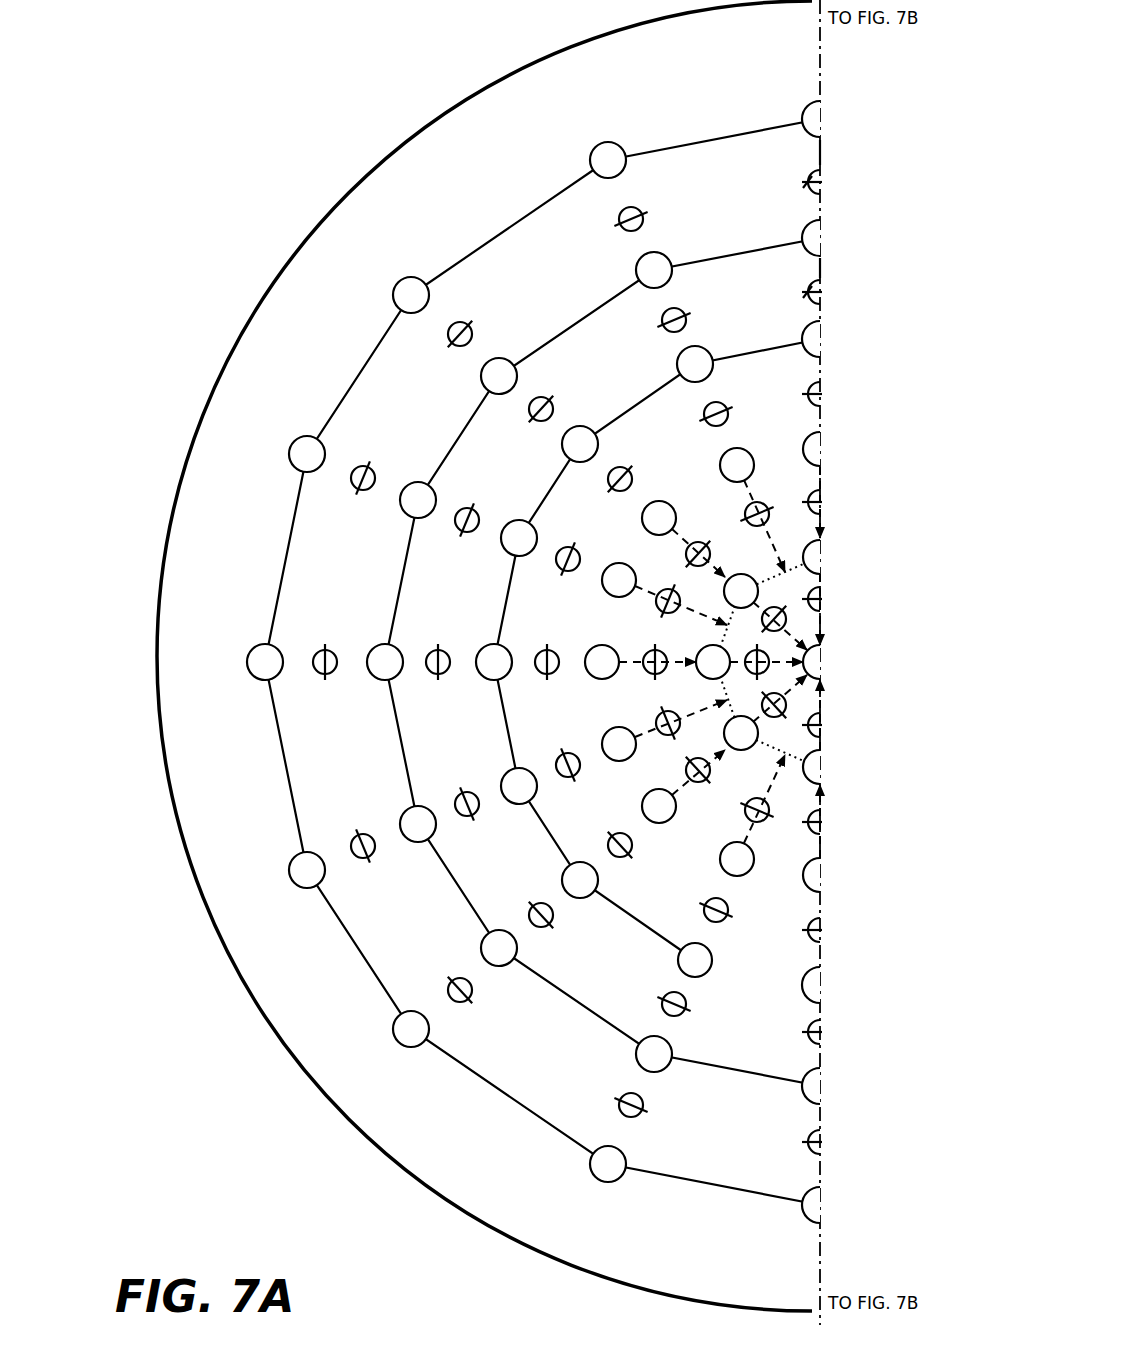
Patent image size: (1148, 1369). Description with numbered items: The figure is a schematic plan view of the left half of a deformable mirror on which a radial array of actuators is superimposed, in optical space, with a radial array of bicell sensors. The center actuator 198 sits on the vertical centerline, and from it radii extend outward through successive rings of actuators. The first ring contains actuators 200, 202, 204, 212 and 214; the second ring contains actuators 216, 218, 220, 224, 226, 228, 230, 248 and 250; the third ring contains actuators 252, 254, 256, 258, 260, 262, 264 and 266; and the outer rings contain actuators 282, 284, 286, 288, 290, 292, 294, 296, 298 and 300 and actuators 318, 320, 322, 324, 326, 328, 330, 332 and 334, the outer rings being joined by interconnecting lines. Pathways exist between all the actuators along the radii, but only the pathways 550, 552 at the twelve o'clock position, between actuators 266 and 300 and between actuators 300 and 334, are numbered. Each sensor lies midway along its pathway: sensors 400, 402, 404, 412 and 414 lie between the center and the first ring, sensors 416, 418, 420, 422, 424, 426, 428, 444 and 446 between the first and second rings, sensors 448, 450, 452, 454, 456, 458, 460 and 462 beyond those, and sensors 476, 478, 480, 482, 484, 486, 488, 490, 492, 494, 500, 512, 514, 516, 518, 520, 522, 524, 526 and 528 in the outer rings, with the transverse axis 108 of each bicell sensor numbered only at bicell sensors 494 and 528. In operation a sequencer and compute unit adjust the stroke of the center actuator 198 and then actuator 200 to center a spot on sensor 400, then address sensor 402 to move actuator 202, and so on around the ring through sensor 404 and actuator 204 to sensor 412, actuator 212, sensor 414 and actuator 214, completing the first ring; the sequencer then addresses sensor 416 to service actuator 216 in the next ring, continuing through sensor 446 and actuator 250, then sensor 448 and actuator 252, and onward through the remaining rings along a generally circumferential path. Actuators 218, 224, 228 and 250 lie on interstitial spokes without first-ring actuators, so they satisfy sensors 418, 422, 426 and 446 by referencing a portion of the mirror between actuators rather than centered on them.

The transverse axis 108 is at (802, 184).
The center actuator 198 is at (832, 662).
The actuator 200 is at (702, 650).
The actuator 202 is at (738, 576).
The actuator 204 is at (808, 546).
The actuator 212 is at (810, 780).
The actuator 214 is at (724, 736).
The actuator 216 is at (642, 805).
The actuator 218 is at (604, 735).
The actuator 220 is at (590, 650).
The actuator 224 is at (607, 566).
The actuator 226 is at (650, 502).
The actuator 228 is at (722, 458).
The actuator 230 is at (810, 437).
The actuator 248 is at (808, 888).
The actuator 250 is at (720, 862).
The actuator 252 is at (678, 956).
The actuator 254 is at (565, 872).
The actuator 256 is at (507, 770).
The actuator 258 is at (490, 645).
The actuator 260 is at (518, 521).
The actuator 262 is at (582, 427).
The actuator 264 is at (679, 363).
The actuator 266 is at (804, 339).
The actuator 282 is at (804, 985).
The actuator 284 is at (805, 1090).
The actuator 286 is at (638, 1054).
The actuator 288 is at (484, 946).
The actuator 290 is at (404, 812).
The actuator 292 is at (381, 645).
The actuator 294 is at (418, 483).
The actuator 296 is at (486, 371).
The actuator 298 is at (638, 266).
The actuator 300 is at (805, 233).
The actuator 318 is at (812, 1222).
The actuator 320 is at (603, 1180).
The actuator 322 is at (396, 1034).
The actuator 324 is at (290, 872).
The actuator 326 is at (248, 662).
The actuator 328 is at (292, 452).
The actuator 330 is at (400, 288).
The actuator 332 is at (597, 152).
The actuator 334 is at (810, 110).
The sensor 400 is at (745, 670).
The sensor 402 is at (762, 616).
The sensor 404 is at (810, 599).
The sensor 412 is at (814, 730).
The sensor 414 is at (768, 718).
The sensor 416 is at (686, 772).
The sensor 418 is at (656, 718).
The sensor 420 is at (647, 672).
The sensor 422 is at (656, 603).
The sensor 424 is at (686, 549).
The sensor 426 is at (746, 506).
The sensor 428 is at (810, 496).
The sensor 444 is at (810, 833).
The sensor 446 is at (746, 816).
The sensor 448 is at (704, 910).
The sensor 450 is at (608, 841).
The sensor 452 is at (559, 754).
The sensor 454 is at (543, 650).
The sensor 456 is at (563, 547).
The sensor 458 is at (614, 468).
The sensor 460 is at (704, 413).
The sensor 462 is at (808, 390).
The sensor 476 is at (808, 936).
The sensor 478 is at (808, 1030).
The sensor 480 is at (663, 995).
The sensor 482 is at (531, 903).
The sensor 484 is at (458, 793).
The sensor 486 is at (436, 650).
The sensor 488 is at (461, 508).
The sensor 490 is at (545, 396).
The sensor 492 is at (662, 320).
The bicell sensor 494 is at (808, 290).
The sensor 500 is at (818, 268).
The sensor 512 is at (808, 1140).
The sensor 514 is at (619, 1106).
The sensor 516 is at (446, 984).
The sensor 518 is at (352, 835).
The sensor 520 is at (318, 650).
The sensor 522 is at (358, 466).
The sensor 524 is at (446, 333).
The sensor 526 is at (619, 217).
The bicell sensor 528 is at (808, 180).
The pathway 550 is at (503, 232).
The pathway 552 is at (818, 153).